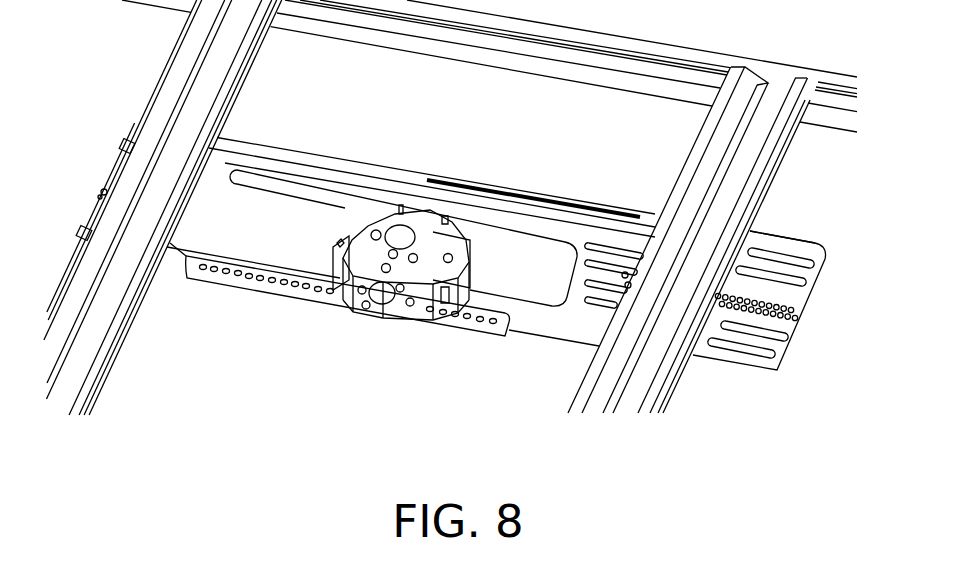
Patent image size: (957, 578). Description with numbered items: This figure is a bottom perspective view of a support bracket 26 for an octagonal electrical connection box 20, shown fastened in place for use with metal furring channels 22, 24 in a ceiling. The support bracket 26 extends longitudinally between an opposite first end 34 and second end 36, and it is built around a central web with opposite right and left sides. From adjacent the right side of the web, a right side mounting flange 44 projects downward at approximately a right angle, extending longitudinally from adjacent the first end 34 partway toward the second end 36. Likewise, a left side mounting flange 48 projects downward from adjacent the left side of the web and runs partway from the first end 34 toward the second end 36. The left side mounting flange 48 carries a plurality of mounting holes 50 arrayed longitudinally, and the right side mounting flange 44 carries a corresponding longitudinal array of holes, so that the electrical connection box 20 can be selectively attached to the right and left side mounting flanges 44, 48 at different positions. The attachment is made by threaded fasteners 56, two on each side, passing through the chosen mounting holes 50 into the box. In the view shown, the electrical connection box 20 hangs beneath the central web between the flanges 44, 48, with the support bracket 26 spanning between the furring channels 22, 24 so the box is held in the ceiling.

The electrical connection box 20 is at (400, 314).
The metal furring channel 22 is at (80, 276).
The metal furring channel 24 is at (748, 157).
The support bracket 26 is at (533, 173).
The first end 34 is at (117, 160).
The second end 36 is at (800, 314).
The right side mounting flange 44 is at (300, 182).
The left side mounting flange 48 is at (241, 287).
The mounting holes 50 is at (293, 294).
The threaded fasteners 56 is at (98, 191).